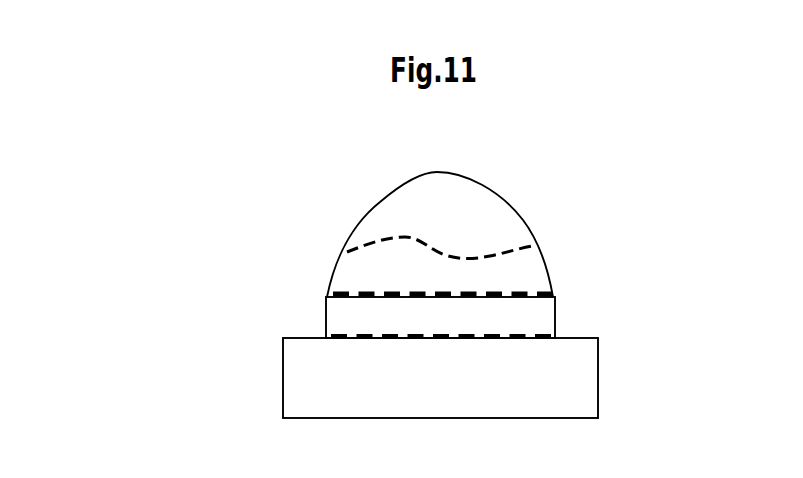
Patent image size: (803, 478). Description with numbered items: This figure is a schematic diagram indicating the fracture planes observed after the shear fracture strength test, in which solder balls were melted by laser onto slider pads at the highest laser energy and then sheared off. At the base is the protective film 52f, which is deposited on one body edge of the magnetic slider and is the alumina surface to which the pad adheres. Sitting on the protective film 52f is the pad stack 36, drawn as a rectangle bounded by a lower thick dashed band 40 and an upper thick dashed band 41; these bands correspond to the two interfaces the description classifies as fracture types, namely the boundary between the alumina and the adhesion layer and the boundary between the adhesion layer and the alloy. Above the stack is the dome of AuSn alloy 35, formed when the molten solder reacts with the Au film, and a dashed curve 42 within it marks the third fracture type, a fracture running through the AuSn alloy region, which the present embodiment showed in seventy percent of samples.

The AuSn alloy 35 is at (400, 209).
The LED chip 36 is at (328, 315).
The lower electrode 40 is at (527, 332).
The upper electrode 41 is at (520, 293).
The phosphor layer 42 is at (497, 250).
The protective film 52f is at (297, 380).